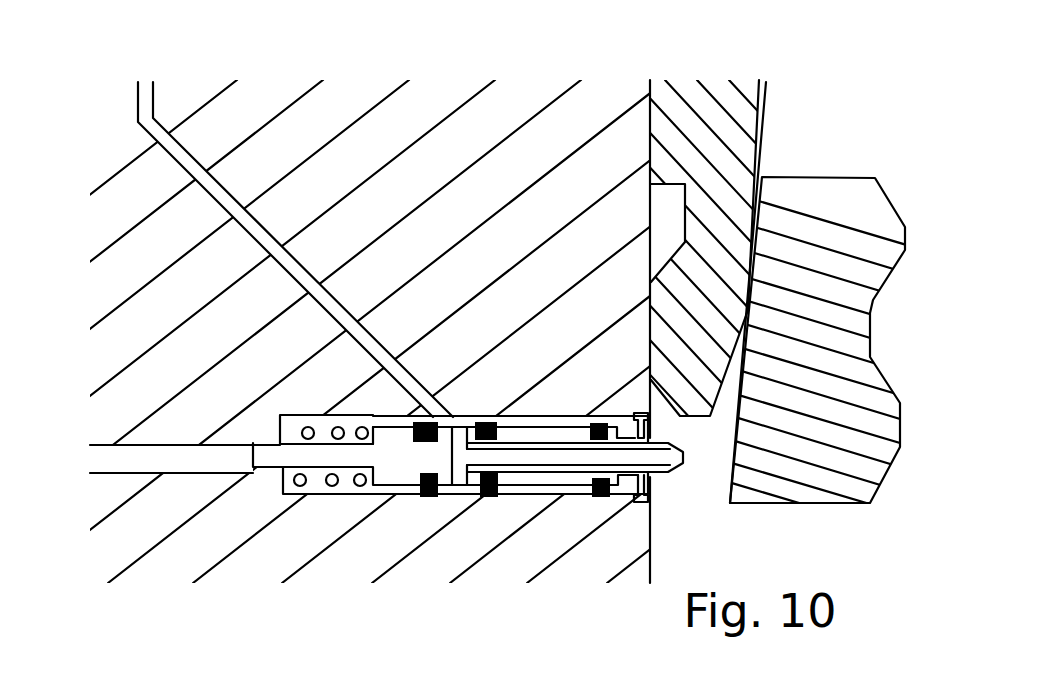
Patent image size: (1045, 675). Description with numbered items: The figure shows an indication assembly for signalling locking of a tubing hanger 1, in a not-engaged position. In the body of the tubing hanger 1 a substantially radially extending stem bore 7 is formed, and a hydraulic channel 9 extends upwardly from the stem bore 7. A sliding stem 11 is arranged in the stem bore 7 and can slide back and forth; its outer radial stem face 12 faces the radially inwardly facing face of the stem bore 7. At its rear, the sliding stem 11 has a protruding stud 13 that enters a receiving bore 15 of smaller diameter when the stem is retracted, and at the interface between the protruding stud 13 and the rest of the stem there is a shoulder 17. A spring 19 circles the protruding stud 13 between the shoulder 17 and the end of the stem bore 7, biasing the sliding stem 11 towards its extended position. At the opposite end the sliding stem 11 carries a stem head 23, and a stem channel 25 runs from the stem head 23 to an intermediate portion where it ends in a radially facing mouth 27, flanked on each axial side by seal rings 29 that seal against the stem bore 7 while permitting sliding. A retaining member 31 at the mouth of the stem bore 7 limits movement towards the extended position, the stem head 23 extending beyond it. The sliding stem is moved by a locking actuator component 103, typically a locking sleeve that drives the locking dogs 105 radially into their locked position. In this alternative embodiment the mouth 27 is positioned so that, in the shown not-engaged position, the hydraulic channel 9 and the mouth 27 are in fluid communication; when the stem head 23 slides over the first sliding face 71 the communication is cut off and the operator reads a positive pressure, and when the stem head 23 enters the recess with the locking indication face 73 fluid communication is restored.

The tubing hanger 1 is at (497, 118).
The stem bore 7 is at (409, 497).
The hydraulic channel 9 is at (188, 158).
The sliding stem 11 is at (527, 438).
The outer radial stem face 12 is at (547, 498).
The protruding stud 13 is at (307, 493).
The receiving bore 15 is at (143, 457).
The shoulder 17 is at (343, 423).
The spring 19 is at (310, 428).
The stem head 23 is at (684, 472).
The stem channel 25 is at (553, 457).
The mouth 27 is at (473, 497).
The seal rings 29 is at (603, 497).
The retaining member 31 is at (652, 497).
The first sliding face 71 is at (650, 345).
The locking indication face 73 is at (682, 222).
The locking actuator component 103 is at (748, 120).
The locking dogs 105 is at (818, 190).